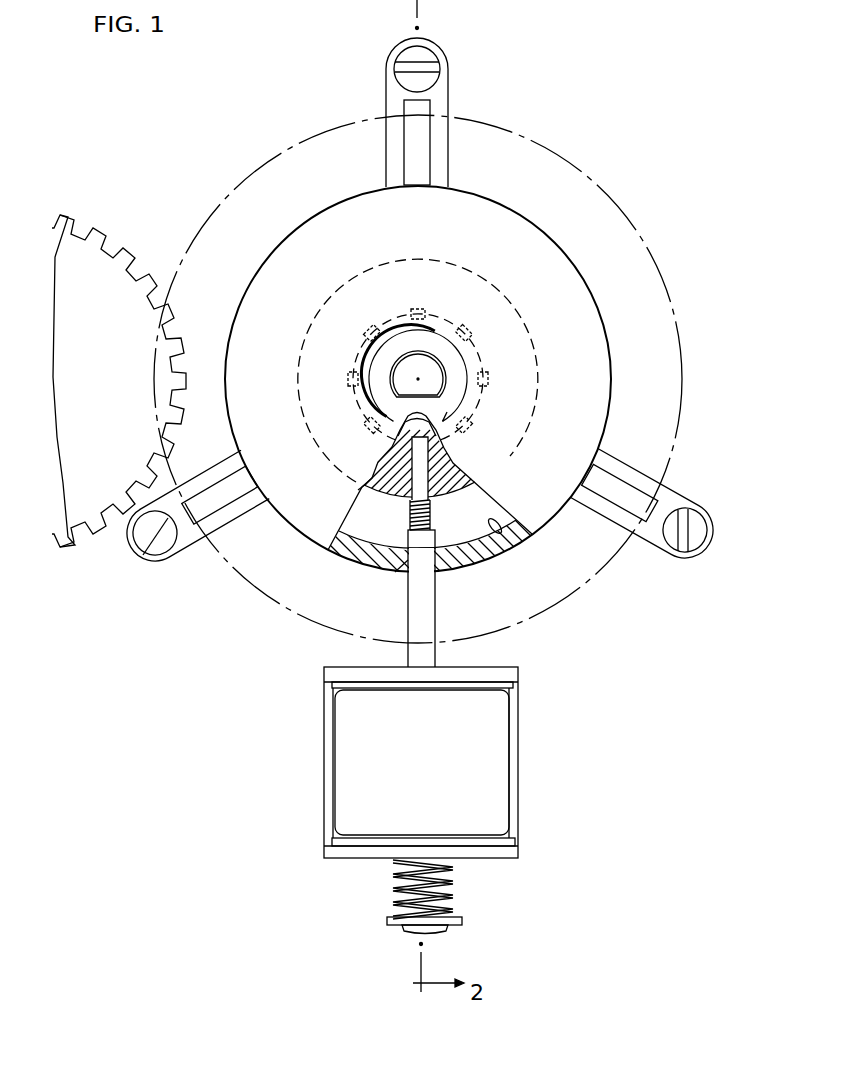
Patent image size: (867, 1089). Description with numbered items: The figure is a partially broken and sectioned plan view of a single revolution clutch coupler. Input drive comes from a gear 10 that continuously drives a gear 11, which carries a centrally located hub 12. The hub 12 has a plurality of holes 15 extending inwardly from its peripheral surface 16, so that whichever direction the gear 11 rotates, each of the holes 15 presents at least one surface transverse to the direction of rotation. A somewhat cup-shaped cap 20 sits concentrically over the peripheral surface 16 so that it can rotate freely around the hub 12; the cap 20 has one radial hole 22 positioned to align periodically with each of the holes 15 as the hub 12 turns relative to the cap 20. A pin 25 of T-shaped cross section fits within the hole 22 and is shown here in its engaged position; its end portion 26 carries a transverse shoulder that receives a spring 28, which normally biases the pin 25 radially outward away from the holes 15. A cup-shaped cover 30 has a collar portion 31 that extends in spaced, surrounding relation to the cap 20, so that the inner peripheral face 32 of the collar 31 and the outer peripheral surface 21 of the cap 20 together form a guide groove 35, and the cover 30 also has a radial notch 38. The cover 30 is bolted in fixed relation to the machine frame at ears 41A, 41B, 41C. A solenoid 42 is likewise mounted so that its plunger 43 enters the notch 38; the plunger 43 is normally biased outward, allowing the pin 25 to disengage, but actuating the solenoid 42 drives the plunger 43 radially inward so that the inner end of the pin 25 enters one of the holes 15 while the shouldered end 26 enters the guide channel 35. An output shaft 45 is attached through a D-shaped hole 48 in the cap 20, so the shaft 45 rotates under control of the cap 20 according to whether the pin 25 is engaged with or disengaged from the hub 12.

The gear 10 is at (97, 278).
The gear 11 is at (210, 235).
The hub 12 is at (393, 397).
The holes 15 is at (457, 323).
The peripheral surface 16 is at (393, 322).
The cap 20 is at (458, 463).
The outer peripheral surface 21 is at (360, 488).
The hole 22 is at (436, 490).
The pin 25 is at (420, 475).
The end portion 26 is at (430, 540).
The spring 28 is at (411, 523).
The cover 30 is at (582, 280).
The collar portion 31 is at (360, 554).
The inner peripheral face 32 is at (500, 548).
The guide groove 35 is at (486, 500).
The notch 38 is at (404, 570).
The ear 41A is at (440, 83).
The ear 41B is at (155, 561).
The ear 41C is at (690, 556).
The solenoid 42 is at (500, 755).
The plunger 43 is at (422, 606).
The output shaft 45 is at (433, 372).
The D-shaped hole 48 is at (485, 410).